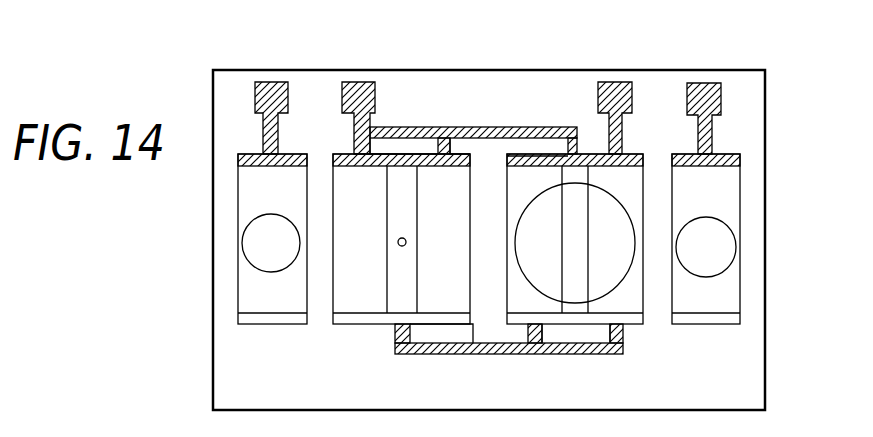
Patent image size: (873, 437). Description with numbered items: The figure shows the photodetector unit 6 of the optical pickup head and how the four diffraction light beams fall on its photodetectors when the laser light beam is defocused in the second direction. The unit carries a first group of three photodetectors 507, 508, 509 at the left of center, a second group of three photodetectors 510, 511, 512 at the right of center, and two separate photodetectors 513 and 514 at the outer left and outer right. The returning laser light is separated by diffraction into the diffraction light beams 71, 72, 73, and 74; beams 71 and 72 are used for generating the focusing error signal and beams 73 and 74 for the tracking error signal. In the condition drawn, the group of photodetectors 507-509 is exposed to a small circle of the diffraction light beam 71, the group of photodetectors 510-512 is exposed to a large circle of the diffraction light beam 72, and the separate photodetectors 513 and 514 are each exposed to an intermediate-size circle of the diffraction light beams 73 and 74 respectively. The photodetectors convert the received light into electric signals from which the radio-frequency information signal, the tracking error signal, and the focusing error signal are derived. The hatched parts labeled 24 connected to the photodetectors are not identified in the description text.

The photodetector unit 6 is at (765, 161).
The terminal pins and connecting conductors 24 is at (272, 110).
The diffraction light beam 71 is at (402, 237).
The diffraction light beam 72 is at (577, 183).
The diffraction light beam 73 is at (288, 212).
The diffraction light beam 74 is at (717, 217).
The photodetector 507 is at (352, 303).
The photodetector 508 is at (405, 303).
The photodetector 509 is at (452, 303).
The photodetector 510 is at (537, 305).
The photodetector 511 is at (578, 310).
The photodetector 512 is at (630, 303).
The photodetector 513 is at (268, 305).
The photodetector 514 is at (713, 303).